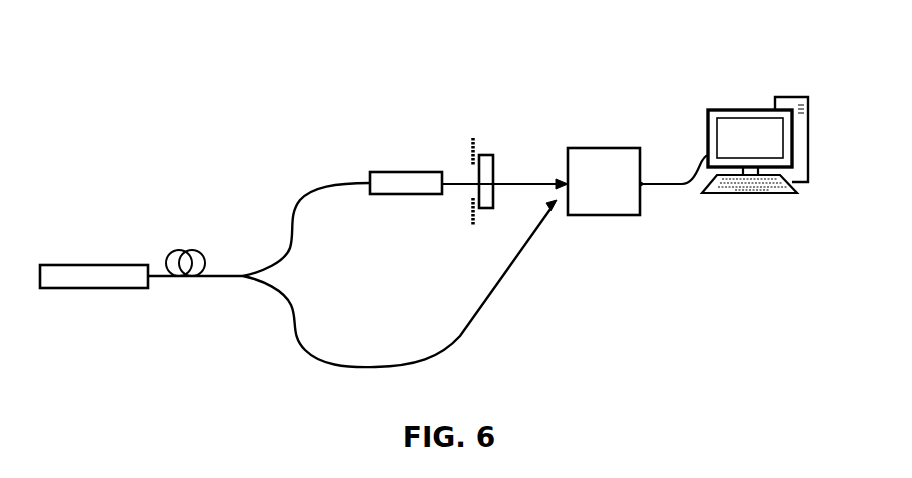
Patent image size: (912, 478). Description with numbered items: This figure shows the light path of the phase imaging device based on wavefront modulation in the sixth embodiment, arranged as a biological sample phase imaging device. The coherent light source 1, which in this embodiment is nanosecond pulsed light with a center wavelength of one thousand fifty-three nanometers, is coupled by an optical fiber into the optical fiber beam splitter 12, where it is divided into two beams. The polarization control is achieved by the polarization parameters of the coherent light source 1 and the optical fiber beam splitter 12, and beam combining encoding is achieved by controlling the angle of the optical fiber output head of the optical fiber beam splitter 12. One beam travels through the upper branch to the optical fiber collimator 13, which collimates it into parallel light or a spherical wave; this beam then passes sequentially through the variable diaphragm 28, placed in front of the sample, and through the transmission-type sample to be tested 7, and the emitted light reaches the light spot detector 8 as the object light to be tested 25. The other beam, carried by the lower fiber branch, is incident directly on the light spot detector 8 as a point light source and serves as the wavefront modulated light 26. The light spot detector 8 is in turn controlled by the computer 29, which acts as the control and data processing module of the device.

The coherent light source 1 is at (70, 275).
The optical fiber beam splitter 12 is at (190, 249).
The optical fiber collimator 13 is at (400, 172).
The sample to be tested 7 is at (490, 155).
The object light to be tested 25 is at (528, 184).
The wavefront modulated light 26 is at (520, 252).
The variable diaphragm 28 is at (473, 223).
The light spot detector 8 is at (610, 200).
The computer 29 is at (740, 110).